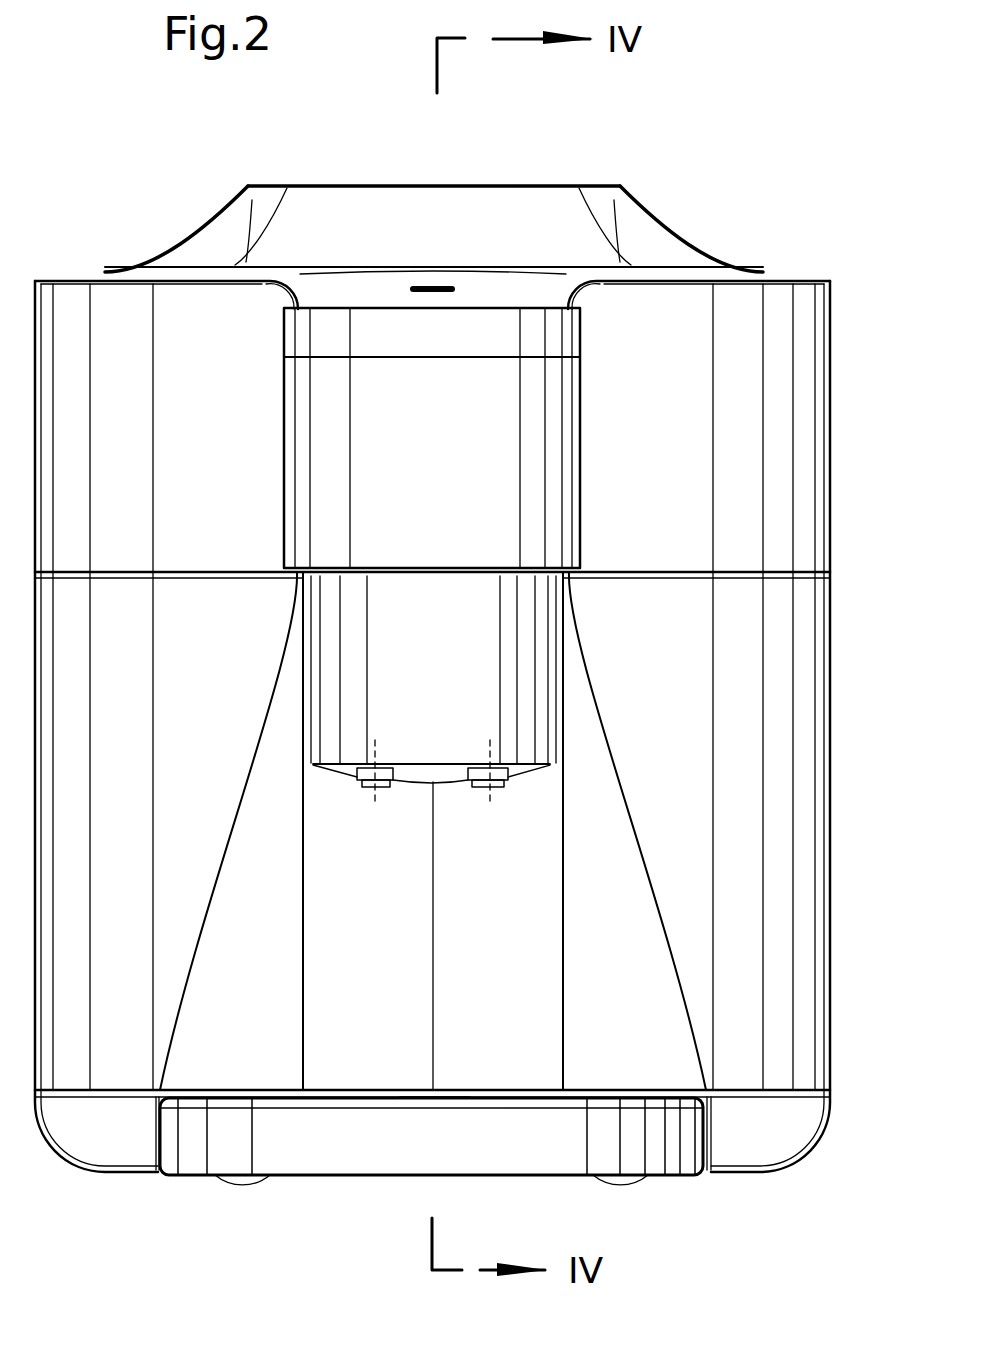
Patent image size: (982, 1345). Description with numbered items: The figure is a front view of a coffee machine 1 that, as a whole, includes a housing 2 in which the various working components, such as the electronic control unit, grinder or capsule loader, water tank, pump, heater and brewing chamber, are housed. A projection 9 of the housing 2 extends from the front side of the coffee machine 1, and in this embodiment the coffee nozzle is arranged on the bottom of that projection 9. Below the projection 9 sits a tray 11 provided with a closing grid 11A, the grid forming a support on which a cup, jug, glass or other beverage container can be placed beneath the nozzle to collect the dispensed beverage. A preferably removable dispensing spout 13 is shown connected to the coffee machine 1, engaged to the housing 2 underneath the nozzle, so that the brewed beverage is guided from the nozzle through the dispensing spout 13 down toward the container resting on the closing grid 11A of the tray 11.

The coffee machine 1 is at (690, 164).
The housing 2 is at (766, 328).
The projection 9 is at (450, 470).
The tray 11 is at (378, 1152).
The closing grid 11A is at (455, 1093).
The dispensing spout 13 is at (446, 680).